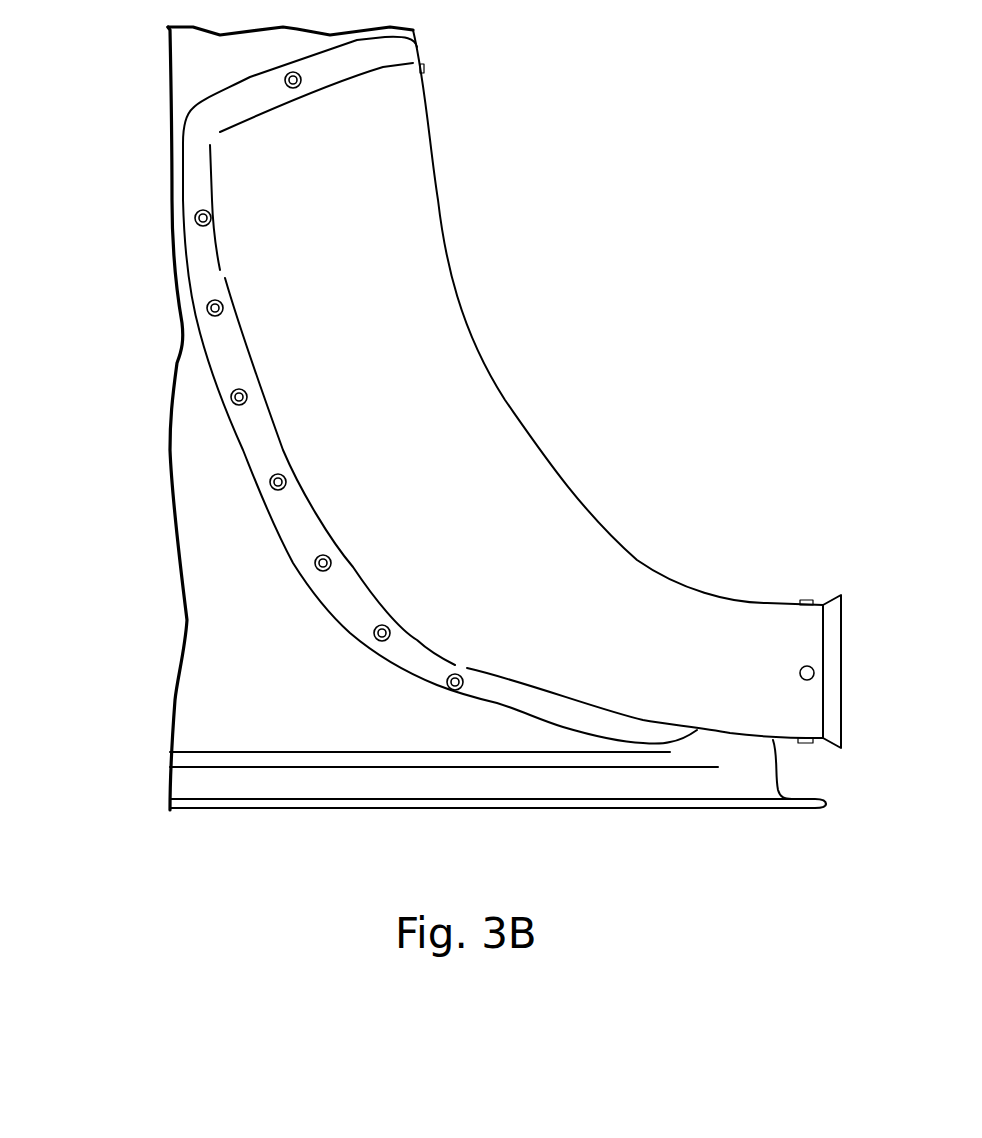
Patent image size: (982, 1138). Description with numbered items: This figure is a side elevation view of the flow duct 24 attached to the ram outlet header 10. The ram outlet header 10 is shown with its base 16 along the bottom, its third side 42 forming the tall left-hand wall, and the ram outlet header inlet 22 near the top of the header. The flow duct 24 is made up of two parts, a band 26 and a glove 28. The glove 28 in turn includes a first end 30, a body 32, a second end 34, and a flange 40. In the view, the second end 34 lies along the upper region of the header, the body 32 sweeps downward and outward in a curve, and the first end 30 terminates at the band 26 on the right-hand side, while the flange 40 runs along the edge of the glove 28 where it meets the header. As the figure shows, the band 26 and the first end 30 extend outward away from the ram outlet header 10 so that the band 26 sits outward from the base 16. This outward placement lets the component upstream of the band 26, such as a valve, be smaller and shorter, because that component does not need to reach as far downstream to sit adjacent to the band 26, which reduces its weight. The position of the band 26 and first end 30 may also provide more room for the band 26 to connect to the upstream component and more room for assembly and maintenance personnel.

The ram outlet header 10 is at (152, 356).
The base 16 is at (608, 788).
The ram outlet header inlet 22 is at (203, 65).
The flow duct 24 is at (654, 389).
The band 26 is at (837, 665).
The glove 28 is at (505, 398).
The first end 30 is at (758, 630).
The body 32 is at (535, 517).
The second end 34 is at (400, 100).
The flange 40 is at (348, 595).
The third side 42 is at (227, 548).